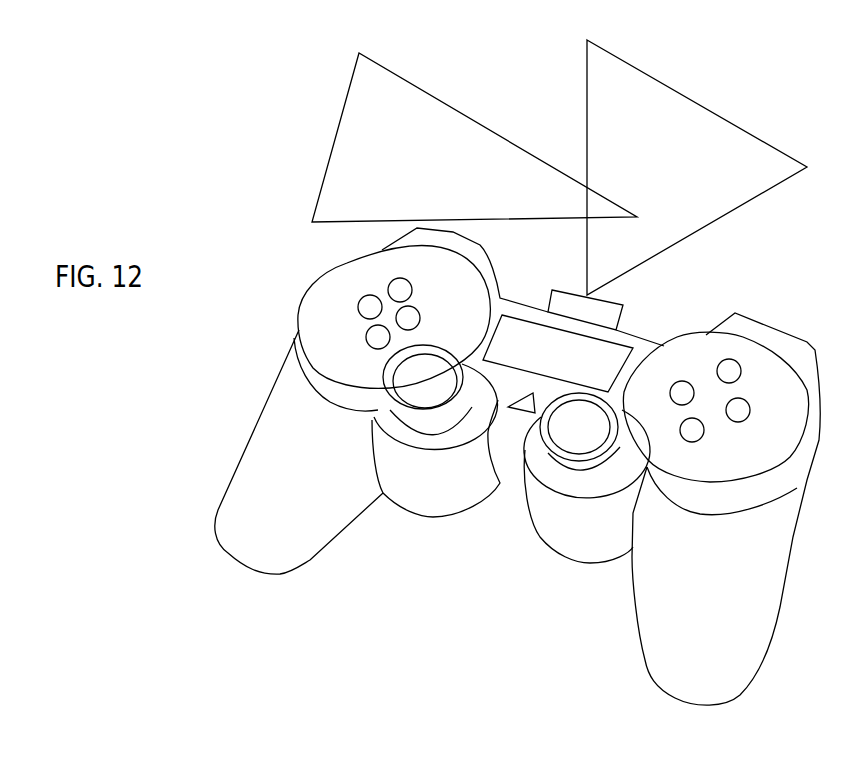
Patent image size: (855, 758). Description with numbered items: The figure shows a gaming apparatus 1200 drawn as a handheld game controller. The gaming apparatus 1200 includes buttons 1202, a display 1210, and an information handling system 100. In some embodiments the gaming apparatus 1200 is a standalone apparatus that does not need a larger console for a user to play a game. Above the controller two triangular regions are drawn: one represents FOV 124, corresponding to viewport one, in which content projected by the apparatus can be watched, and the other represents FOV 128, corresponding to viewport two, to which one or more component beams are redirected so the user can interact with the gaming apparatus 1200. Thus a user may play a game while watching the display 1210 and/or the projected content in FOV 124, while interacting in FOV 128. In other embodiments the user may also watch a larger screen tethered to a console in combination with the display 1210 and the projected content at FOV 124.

The information handling system 100 is at (622, 305).
The FOV 124 is at (746, 132).
The FOV 128 is at (341, 112).
The gaming apparatus 1200 is at (450, 466).
The buttons 1202 is at (367, 341).
The display 1210 is at (572, 366).